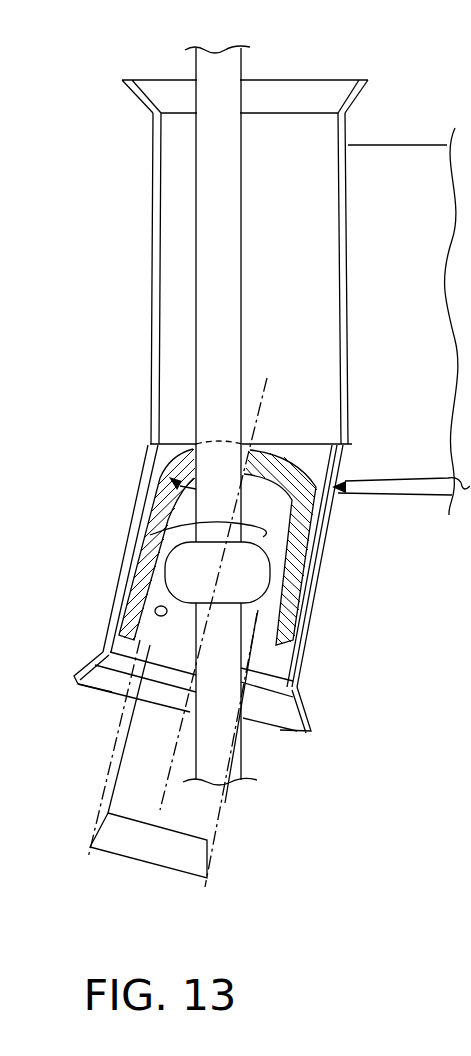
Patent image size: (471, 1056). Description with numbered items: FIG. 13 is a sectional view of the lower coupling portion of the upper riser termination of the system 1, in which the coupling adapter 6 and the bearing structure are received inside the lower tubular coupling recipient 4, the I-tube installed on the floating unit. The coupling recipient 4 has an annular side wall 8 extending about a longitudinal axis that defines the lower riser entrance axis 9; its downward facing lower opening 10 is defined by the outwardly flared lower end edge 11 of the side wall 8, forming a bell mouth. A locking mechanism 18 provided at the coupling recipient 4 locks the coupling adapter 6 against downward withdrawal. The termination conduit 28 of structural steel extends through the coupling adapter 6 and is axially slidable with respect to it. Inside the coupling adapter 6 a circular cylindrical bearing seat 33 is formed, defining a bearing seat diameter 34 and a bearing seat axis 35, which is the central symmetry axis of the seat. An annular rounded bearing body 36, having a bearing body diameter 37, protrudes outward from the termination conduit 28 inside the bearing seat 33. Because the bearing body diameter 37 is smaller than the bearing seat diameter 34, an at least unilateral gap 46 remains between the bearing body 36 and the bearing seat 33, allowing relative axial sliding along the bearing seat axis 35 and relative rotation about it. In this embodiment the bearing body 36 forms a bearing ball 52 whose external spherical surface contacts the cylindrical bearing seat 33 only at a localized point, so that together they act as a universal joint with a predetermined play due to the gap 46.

The system 1 is at (96, 475).
The lower tubular coupling recipient 4 is at (328, 533).
The coupling adapter 6 is at (287, 633).
The annular side wall 8 is at (312, 595).
The lower riser entrance axis 9 is at (150, 535).
The lower opening 10 is at (142, 685).
The lower end edge 11 is at (287, 733).
The locking mechanism 18 is at (100, 690).
The termination conduit 28 is at (218, 207).
The circular cylindrical bearing seat 33 is at (150, 613).
The bearing seat diameter 34 is at (162, 868).
The bearing seat axis 35 is at (260, 402).
The annular rounded bearing body 36 is at (270, 570).
The bearing body diameter 37 is at (137, 815).
The gap 46 is at (347, 460).
The bearing ball 52 is at (170, 563).